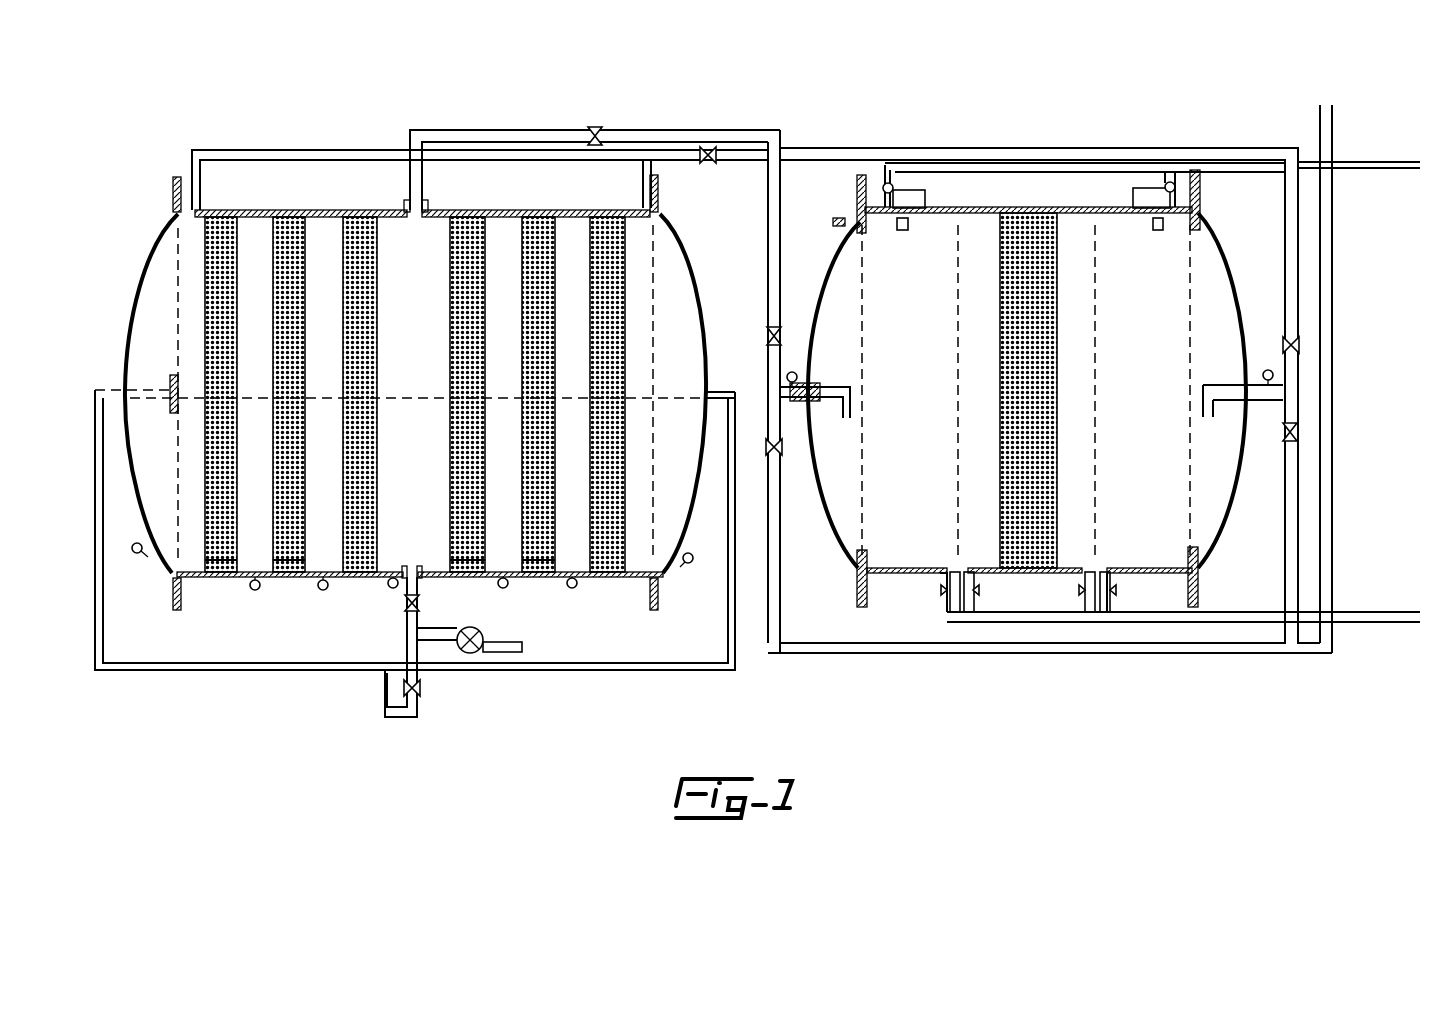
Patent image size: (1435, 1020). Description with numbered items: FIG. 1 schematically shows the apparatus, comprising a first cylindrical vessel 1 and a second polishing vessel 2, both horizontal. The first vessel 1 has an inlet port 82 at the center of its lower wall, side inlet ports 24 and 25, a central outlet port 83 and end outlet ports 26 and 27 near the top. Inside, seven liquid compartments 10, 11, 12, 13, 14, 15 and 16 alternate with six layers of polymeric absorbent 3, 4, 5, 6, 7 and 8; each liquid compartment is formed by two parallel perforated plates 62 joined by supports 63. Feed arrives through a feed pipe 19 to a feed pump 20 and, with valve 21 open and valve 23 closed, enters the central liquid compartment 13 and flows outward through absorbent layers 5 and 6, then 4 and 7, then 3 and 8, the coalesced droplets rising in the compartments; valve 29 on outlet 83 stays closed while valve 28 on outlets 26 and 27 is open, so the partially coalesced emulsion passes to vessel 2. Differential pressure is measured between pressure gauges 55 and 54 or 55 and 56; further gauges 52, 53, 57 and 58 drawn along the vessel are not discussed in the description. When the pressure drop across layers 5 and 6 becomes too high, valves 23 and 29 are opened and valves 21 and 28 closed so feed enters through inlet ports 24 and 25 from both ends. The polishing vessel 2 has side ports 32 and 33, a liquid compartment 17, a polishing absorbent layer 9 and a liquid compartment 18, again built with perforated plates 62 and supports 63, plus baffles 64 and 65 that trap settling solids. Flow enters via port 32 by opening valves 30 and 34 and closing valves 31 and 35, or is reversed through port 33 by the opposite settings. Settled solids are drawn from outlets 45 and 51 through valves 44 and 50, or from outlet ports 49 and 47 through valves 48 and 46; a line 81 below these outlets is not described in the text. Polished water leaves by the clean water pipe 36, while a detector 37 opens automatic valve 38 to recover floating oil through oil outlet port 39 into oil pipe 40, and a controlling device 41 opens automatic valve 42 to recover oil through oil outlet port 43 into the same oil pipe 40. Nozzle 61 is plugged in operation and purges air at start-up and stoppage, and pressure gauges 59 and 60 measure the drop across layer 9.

The first cylindrical vessel 1 is at (136, 266).
The second polishing vessel 2 is at (817, 263).
The absorbent layer 3 is at (221, 548).
The absorbent layer 4 is at (289, 548).
The absorbent layer 5 is at (357, 548).
The absorbent layer 6 is at (467, 548).
The absorbent layer 7 is at (540, 548).
The absorbent layer 8 is at (609, 548).
The polishing polymeric absorbent layer 9 is at (1022, 556).
The liquid compartment 10 is at (164, 264).
The liquid compartment 11 is at (258, 256).
The liquid compartment 12 is at (323, 262).
The central liquid compartment 13 is at (398, 262).
The liquid compartment 14 is at (500, 258).
The liquid compartment 15 is at (567, 258).
The liquid compartment 16 is at (676, 284).
The liquid compartment 17 is at (845, 286).
The liquid compartment 18 is at (1078, 294).
The feed pipe 19 is at (503, 657).
The feed pump 20 is at (478, 652).
The valve 21 is at (422, 604).
The valve 23 is at (424, 689).
The inlet port 24 is at (122, 388).
The inlet port 25 is at (712, 394).
The outlet port 26 is at (193, 197).
The outlet port 27 is at (636, 192).
The valve 28 is at (708, 145).
The valve 29 is at (595, 125).
The valve 30 is at (767, 333).
The valve 31 is at (769, 456).
The port 32 is at (800, 380).
The port 33 is at (1250, 400).
The valve 34 is at (1302, 432).
The valve 35 is at (1302, 345).
The clean water pipe 36 is at (1338, 135).
The detector 37 is at (1150, 206).
The automatic valve 38 is at (1168, 182).
The oil outlet port 39 is at (1178, 202).
The oil pipe 40 is at (1358, 171).
The controlling device 41 is at (912, 203).
The automatic valve 42 is at (894, 183).
The oil outlet port 43 is at (878, 198).
The valve 44 is at (945, 592).
The outlet 45 is at (940, 578).
The valve 46 is at (1080, 594).
The outlet port 47 is at (1085, 580).
The valve 48 is at (1118, 594).
The outlet port 49 is at (1108, 578).
The valve 50 is at (963, 580).
The outlet 51 is at (977, 578).
The sensor 52 is at (140, 556).
The sensor 53 is at (256, 592).
The pressure gauge 54 is at (324, 592).
The pressure gauge 55 is at (393, 590).
The pressure gauge 56 is at (507, 590).
The sensor 57 is at (574, 590).
The sensor 58 is at (688, 565).
The pressure gauge 59 is at (784, 372).
The pressure gauge 60 is at (1267, 366).
The nozzle 61 is at (836, 215).
The perforated plate 62 is at (447, 498).
The support 63 is at (574, 405).
The baffle 64 is at (1198, 430).
The baffle 65 is at (1100, 455).
The outlet pipe 81 is at (1365, 622).
The inlet port 82 is at (410, 568).
The outlet port 83 is at (414, 225).